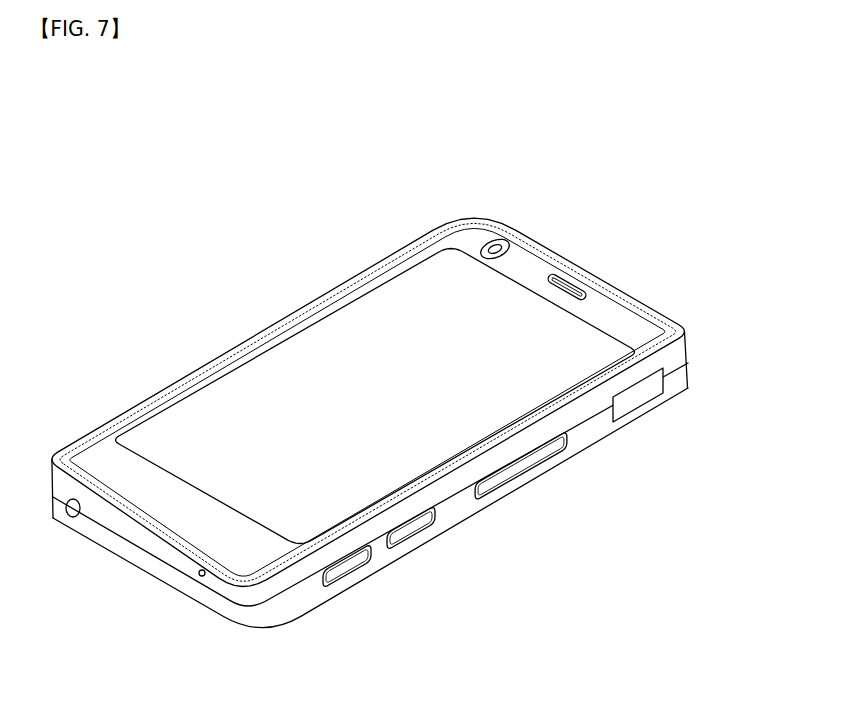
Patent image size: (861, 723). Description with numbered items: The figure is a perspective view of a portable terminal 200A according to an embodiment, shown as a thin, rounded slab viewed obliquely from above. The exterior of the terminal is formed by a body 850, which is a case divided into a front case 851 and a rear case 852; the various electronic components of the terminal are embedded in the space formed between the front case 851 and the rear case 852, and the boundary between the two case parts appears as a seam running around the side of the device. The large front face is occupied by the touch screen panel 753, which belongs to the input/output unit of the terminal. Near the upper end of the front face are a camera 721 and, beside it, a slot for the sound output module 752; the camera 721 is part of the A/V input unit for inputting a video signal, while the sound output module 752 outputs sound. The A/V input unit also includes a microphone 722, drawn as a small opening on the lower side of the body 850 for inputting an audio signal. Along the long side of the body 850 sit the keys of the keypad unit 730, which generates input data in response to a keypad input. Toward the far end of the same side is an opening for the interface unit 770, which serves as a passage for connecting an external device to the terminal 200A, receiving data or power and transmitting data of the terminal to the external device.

The portable terminal 200A is at (424, 416).
The camera 721 is at (493, 241).
The sound output module 752 is at (577, 282).
The touch screen panel 753 is at (293, 515).
The microphone 722 is at (200, 575).
The keypad unit 730 is at (500, 480).
The interface unit 770 is at (637, 398).
The body 850 is at (425, 482).
The front case 851 is at (690, 350).
The rear case 852 is at (690, 378).